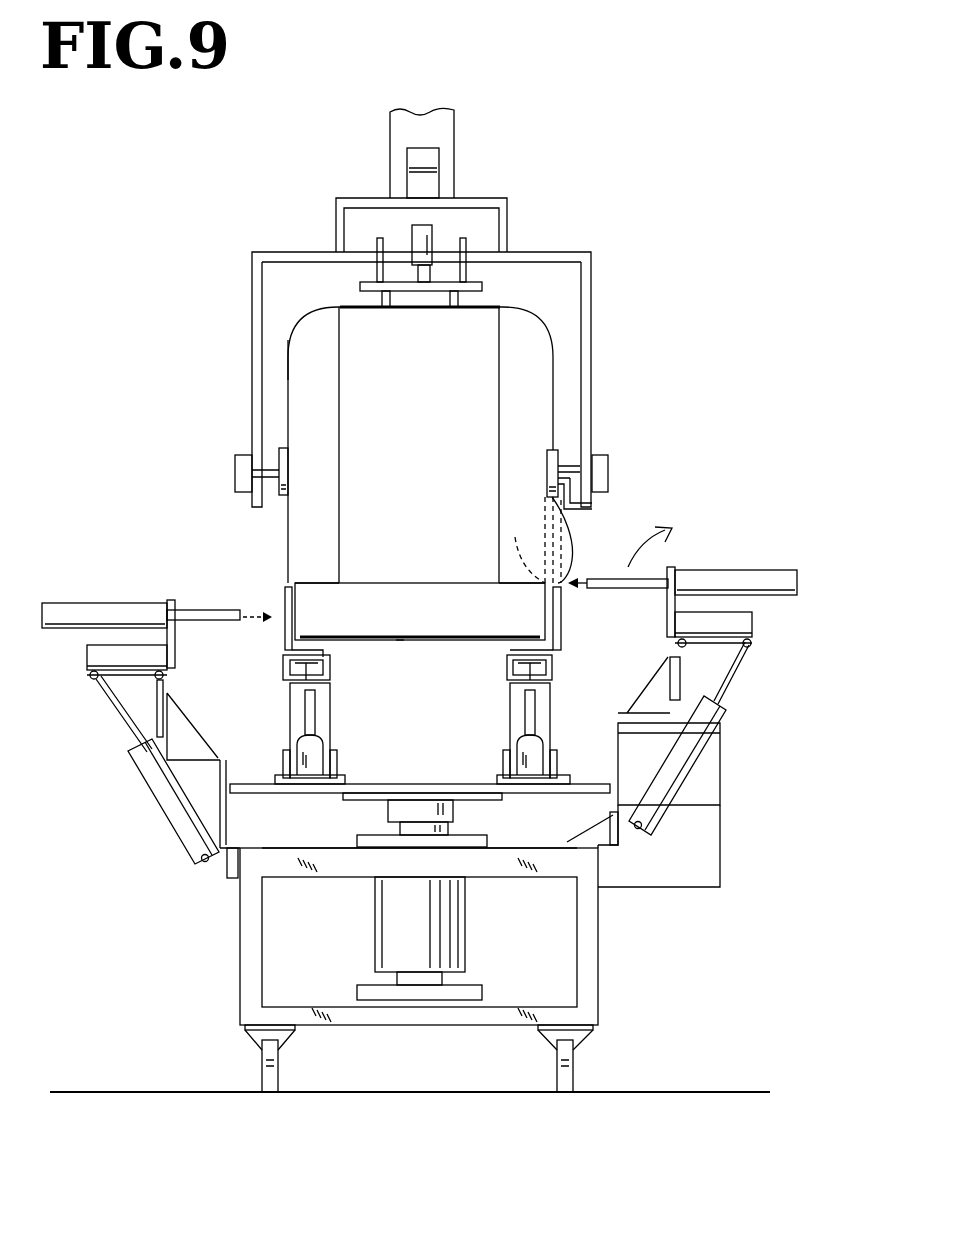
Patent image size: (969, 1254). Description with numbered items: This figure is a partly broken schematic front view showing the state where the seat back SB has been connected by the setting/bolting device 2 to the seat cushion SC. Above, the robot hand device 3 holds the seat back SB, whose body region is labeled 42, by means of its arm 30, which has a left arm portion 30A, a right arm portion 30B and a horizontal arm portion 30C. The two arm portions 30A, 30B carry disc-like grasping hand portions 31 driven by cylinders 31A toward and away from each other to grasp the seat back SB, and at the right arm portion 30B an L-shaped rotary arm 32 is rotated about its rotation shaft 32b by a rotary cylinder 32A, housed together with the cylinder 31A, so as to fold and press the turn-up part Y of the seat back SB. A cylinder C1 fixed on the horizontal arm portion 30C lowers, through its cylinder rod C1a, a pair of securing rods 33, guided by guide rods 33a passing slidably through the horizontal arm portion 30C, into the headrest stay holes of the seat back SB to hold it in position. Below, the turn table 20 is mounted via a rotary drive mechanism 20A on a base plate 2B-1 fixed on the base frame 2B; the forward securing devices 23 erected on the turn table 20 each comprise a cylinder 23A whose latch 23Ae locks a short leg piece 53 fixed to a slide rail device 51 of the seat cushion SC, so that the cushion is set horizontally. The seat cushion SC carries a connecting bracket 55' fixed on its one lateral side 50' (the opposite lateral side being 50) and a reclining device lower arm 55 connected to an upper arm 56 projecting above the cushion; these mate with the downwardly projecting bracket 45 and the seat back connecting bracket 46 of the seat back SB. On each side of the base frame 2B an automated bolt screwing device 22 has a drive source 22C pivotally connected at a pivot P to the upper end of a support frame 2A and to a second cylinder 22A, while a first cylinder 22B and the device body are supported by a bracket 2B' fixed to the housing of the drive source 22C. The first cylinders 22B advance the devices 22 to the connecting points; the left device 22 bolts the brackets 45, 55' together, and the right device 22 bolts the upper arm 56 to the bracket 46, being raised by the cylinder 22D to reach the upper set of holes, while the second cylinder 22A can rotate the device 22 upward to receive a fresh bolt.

The robot hand device 3 is at (453, 130).
The cylinder C1 is at (412, 233).
The cylinder rod C1a is at (430, 272).
The guide rods 33a is at (378, 245).
The horizontal arm portion 30C is at (555, 252).
The arm portion 30A is at (252, 285).
The securing rods 33 is at (382, 300).
The arm 30 is at (592, 318).
The seat back SB is at (288, 357).
The arm portion 30B is at (591, 375).
The body 42 is at (432, 413).
The grasping hand portions 31 is at (281, 455).
The rotation shaft 32b is at (570, 480).
The cylinders 31A is at (240, 478).
The rotary cylinder 32A is at (605, 470).
The rotary arm 32 is at (568, 510).
The seat back connecting bracket 46 is at (533, 540).
The turn-up part Y is at (572, 555).
The lower arm 55 is at (459, 626).
The connecting bracket 55' is at (414, 616).
The upper arm 56 is at (558, 600).
The bracket 45 is at (283, 590).
The slide rail devices 51 is at (283, 668).
The short leg pieces 53 is at (312, 692).
The forward securing devices 23 is at (290, 745).
The latch 23Ae is at (286, 706).
The cylinder 23A is at (300, 786).
The turn table 20 is at (378, 783).
The seat cushion SC is at (400, 642).
The base frame 2B is at (399, 804).
The base plate 2B-1 is at (500, 848).
The rotary drive mechanism 20A is at (388, 937).
The machine 2 is at (224, 920).
The automated connecting device 22 is at (210, 613).
The first cylinder 22B is at (68, 607).
The drive source 22C is at (87, 658).
The pivot P is at (94, 678).
The second cylinder 22A is at (152, 785).
The support post 2B' is at (418, 702).
The cylinder 22D is at (720, 748).
The support frame 2A is at (220, 787).
The lateral side 50' is at (347, 553).
The right plate edge 50 is at (499, 558).